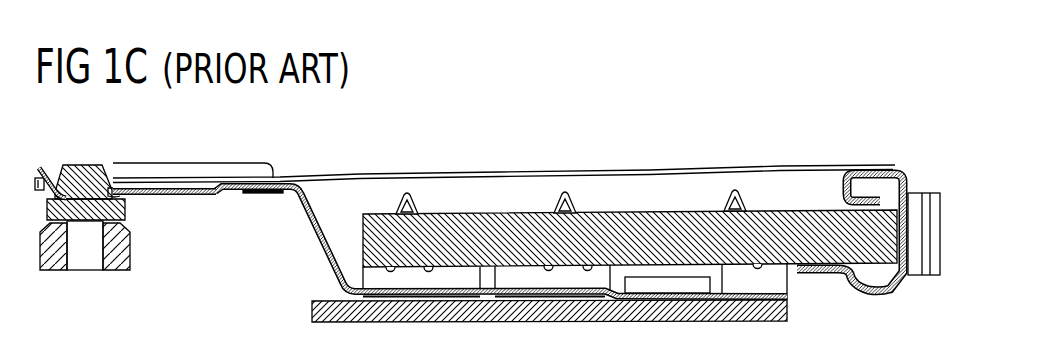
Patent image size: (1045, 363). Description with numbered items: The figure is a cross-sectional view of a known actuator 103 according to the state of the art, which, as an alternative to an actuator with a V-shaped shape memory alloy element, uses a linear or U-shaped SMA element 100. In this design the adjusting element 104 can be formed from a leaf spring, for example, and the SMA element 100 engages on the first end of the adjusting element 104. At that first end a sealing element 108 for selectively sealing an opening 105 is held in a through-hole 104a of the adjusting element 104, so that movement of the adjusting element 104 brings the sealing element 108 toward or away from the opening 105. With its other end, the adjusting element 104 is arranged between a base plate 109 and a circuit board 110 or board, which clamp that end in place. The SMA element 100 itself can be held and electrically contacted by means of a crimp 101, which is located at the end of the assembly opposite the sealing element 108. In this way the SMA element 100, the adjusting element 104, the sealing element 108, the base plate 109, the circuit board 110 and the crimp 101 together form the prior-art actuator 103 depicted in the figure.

The SMA element 100 is at (502, 170).
The crimp 101 is at (901, 190).
The actuator 103 is at (430, 125).
The adjusting element 104 is at (303, 270).
The through-hole 104a is at (116, 200).
The opening 105 is at (87, 262).
The sealing element 108 is at (86, 170).
The base plate 109 is at (789, 311).
The circuit board 110 is at (653, 212).